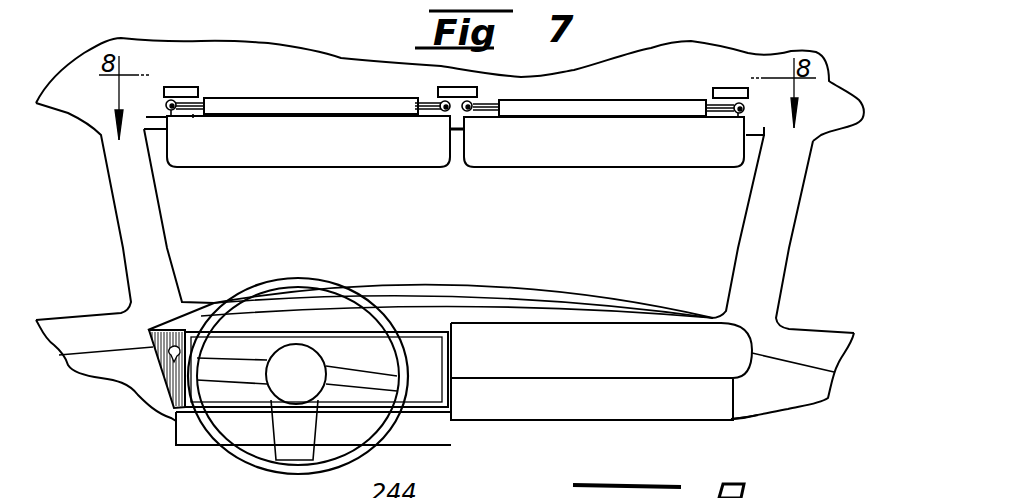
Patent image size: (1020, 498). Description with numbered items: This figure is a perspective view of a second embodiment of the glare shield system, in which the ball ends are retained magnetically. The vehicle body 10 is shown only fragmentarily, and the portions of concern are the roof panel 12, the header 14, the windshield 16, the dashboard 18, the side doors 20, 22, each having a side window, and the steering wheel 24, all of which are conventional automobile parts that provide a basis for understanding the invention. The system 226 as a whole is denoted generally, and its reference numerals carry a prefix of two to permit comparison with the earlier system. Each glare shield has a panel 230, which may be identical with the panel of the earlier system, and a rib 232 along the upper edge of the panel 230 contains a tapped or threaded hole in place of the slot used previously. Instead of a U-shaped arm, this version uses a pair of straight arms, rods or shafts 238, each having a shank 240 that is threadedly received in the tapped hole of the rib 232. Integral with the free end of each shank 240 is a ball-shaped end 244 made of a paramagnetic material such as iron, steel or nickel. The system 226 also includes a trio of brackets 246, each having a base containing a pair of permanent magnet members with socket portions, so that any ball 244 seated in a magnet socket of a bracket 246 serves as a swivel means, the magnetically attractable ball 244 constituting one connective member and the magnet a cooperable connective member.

The vehicle body 10 is at (145, 464).
The roof panel 12 is at (699, 80).
The header 14 is at (455, 133).
The windshield 16 is at (698, 285).
The dashboard 18 is at (598, 363).
The side door 20 is at (113, 380).
The side door 22 is at (780, 397).
The steering wheel 24 is at (248, 467).
The system 226 is at (455, 153).
The panel 230 is at (253, 156).
The rib 232 is at (277, 108).
The straight arm 238 is at (426, 104).
The shank 240 is at (192, 120).
The ball-shaped end 244 is at (165, 107).
The bracket 246 is at (181, 82).